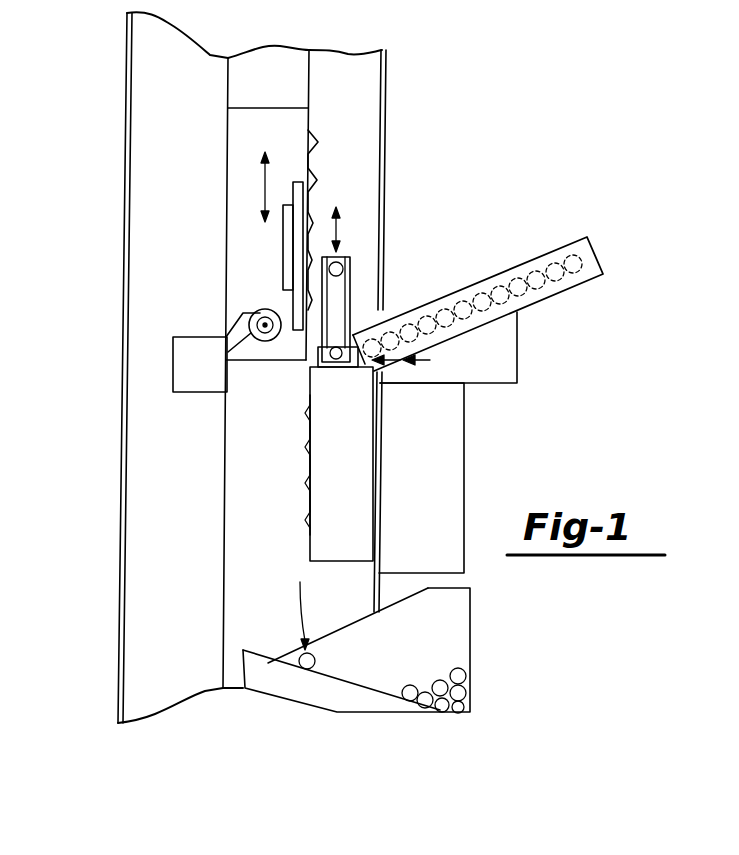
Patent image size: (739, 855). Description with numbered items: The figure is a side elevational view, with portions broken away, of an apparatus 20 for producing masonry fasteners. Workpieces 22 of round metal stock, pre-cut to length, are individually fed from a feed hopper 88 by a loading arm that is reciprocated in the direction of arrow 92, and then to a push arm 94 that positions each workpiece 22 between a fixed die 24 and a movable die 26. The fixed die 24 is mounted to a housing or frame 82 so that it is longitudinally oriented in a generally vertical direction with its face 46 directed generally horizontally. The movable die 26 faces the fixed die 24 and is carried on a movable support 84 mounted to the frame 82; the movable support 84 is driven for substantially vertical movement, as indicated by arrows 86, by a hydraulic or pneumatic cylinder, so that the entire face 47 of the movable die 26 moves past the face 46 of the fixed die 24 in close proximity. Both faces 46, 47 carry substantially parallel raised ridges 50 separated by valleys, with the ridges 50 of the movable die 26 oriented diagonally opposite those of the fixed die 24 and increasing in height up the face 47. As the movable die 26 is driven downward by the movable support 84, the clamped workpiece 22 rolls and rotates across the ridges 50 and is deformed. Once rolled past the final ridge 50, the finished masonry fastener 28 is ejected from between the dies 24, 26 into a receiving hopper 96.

The apparatus 20 is at (102, 470).
The workpieces 22 is at (452, 292).
The fixed die 24 is at (363, 466).
The movable die 26 is at (243, 248).
The masonry fastener 28 is at (472, 708).
The face 46 is at (296, 502).
The face 47 is at (318, 115).
The ridge portions 50 is at (324, 170).
The frame 82 is at (127, 103).
The movable support 84 is at (202, 370).
The arrows 86 is at (265, 188).
The feed hopper 88 is at (545, 300).
The arrow 92 is at (410, 366).
The push arm 94 is at (350, 278).
The receiving hopper 96 is at (437, 648).